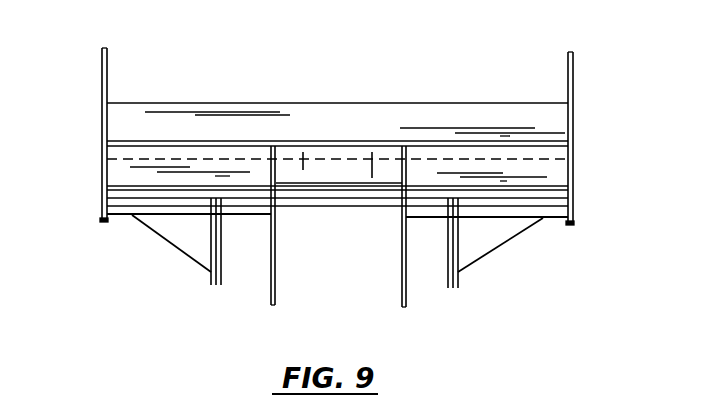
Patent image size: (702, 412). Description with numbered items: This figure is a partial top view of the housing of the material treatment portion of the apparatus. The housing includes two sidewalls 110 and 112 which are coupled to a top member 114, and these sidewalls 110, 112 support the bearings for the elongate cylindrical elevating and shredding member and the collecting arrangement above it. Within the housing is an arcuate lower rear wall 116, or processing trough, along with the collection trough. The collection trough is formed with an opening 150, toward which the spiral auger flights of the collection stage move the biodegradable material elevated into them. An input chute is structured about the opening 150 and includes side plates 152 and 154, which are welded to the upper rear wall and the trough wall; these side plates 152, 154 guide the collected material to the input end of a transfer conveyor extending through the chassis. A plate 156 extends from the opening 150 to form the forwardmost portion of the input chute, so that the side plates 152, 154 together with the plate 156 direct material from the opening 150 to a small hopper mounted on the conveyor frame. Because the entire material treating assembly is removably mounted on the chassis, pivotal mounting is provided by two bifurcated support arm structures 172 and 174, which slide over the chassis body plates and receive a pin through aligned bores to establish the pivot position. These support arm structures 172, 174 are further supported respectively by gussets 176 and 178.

The sidewall 110 is at (102, 77).
The sidewall 112 is at (573, 93).
The top member 114 is at (118, 168).
The arcuate lower rear wall 116 is at (120, 122).
The opening 150 is at (352, 263).
The side plate 152 is at (269, 297).
The side plate 154 is at (404, 300).
The plate 156 is at (316, 168).
The support arm structure 172 is at (209, 278).
The support arm structure 174 is at (460, 272).
The gusset 176 is at (188, 243).
The gusset 178 is at (495, 240).